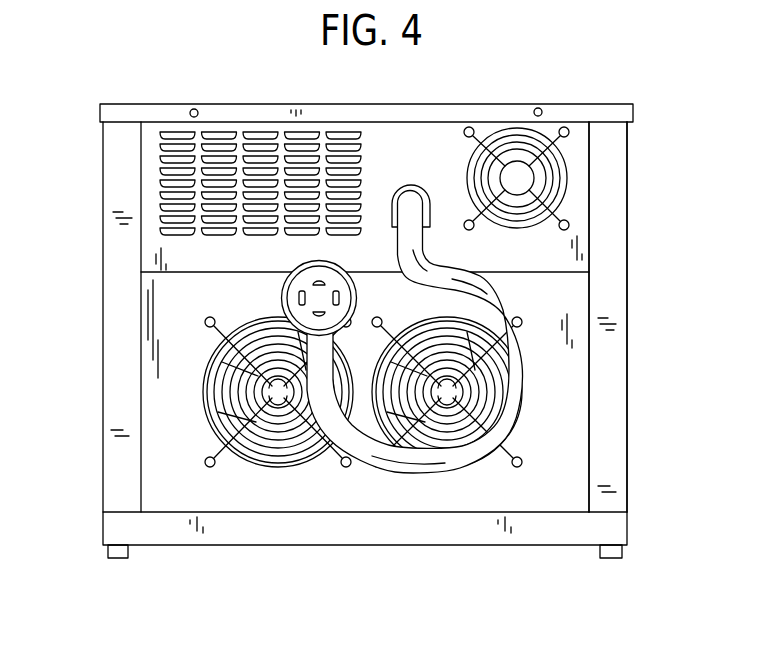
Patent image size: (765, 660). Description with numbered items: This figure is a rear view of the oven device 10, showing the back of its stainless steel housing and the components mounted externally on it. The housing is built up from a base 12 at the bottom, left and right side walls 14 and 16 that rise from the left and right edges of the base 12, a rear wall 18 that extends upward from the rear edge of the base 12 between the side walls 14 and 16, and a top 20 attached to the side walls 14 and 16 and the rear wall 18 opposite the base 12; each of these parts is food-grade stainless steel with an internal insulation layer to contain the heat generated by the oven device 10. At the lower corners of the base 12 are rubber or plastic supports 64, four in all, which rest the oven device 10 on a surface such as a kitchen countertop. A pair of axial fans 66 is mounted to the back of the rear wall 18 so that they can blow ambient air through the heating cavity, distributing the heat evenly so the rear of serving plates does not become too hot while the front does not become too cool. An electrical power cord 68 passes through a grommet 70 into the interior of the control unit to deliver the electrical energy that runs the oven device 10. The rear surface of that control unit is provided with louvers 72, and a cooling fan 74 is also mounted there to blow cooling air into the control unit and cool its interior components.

The oven device 10 is at (132, 47).
The base 12 is at (367, 546).
The left side wall 14 is at (628, 183).
The right side wall 16 is at (112, 181).
The rear wall 18 is at (371, 159).
The top 20 is at (470, 103).
The supports 64 is at (117, 560).
The axial fans 66 is at (282, 468).
The electrical power cord 68 is at (485, 288).
The grommet 70 is at (408, 188).
The louvers 72 is at (261, 131).
The cooling fan 74 is at (559, 151).